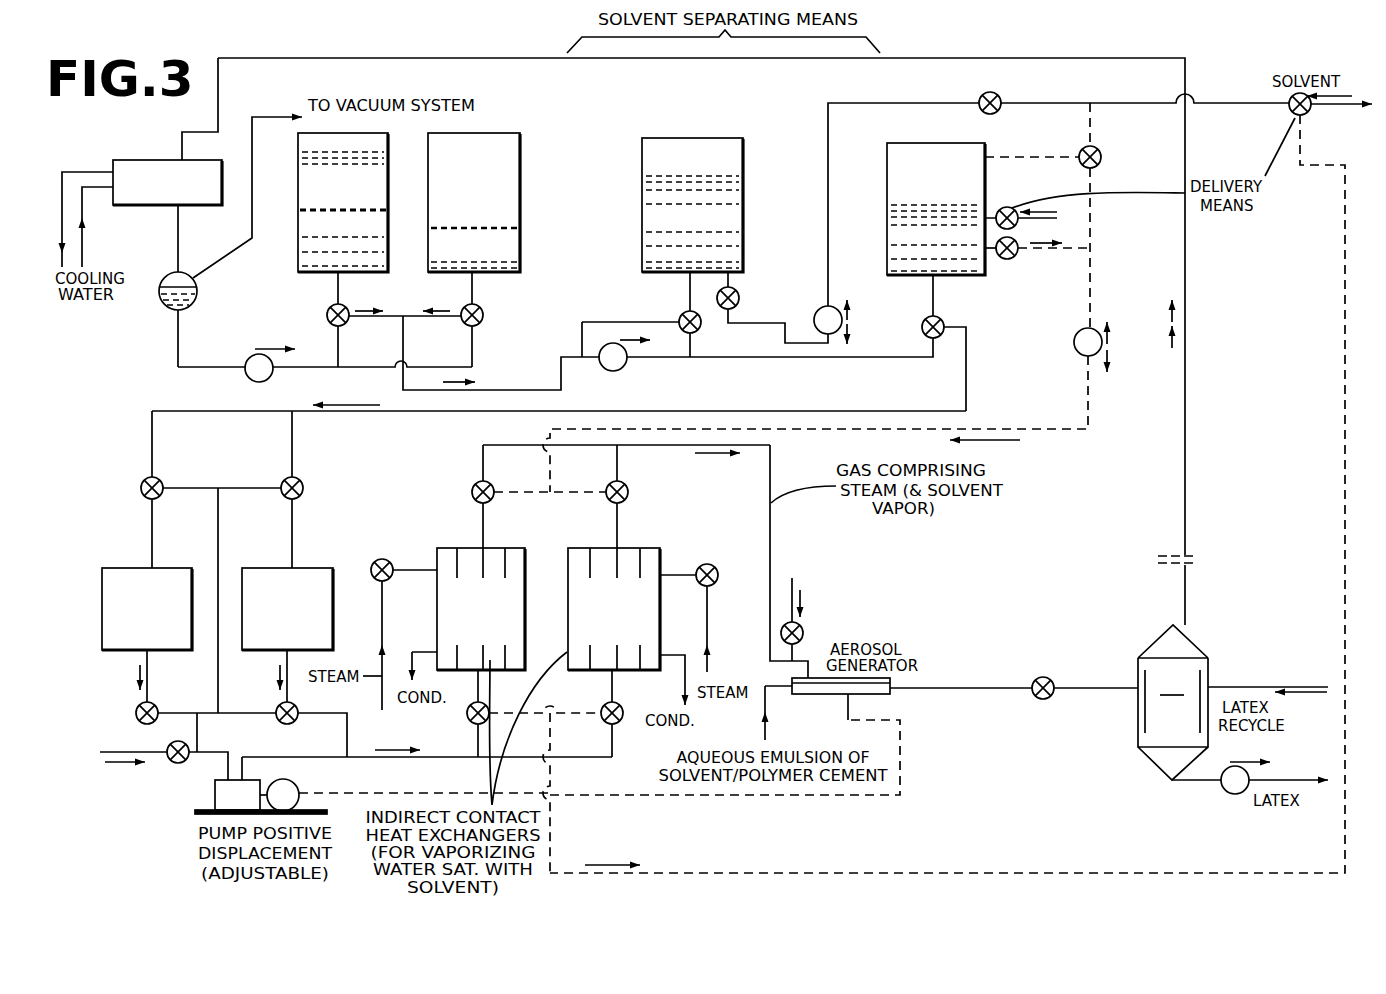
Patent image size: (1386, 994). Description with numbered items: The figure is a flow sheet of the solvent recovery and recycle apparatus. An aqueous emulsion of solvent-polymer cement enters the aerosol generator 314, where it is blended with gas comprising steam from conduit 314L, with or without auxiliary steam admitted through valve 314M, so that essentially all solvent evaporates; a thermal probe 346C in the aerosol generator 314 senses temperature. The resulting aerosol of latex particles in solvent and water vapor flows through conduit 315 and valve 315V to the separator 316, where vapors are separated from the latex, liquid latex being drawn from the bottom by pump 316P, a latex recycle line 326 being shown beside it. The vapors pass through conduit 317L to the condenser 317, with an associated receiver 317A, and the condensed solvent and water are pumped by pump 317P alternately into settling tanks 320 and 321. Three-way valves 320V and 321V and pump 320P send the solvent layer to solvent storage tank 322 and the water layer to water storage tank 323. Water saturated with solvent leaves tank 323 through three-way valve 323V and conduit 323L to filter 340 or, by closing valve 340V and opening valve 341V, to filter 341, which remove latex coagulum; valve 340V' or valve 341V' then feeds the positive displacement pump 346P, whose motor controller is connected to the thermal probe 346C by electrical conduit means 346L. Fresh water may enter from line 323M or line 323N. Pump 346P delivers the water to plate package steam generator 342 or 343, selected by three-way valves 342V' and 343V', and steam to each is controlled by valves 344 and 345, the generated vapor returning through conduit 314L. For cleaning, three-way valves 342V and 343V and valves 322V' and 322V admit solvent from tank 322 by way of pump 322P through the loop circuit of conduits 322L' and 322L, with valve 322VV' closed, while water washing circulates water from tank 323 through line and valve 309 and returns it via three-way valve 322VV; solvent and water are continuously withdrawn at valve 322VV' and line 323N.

The condenser 317 is at (150, 168).
The receiver 317A is at (197, 289).
The conduit 317L is at (558, 60).
The pump 317P is at (252, 360).
The settling tank 320 is at (318, 183).
The three-way valve 320V is at (328, 310).
The pump 320P is at (626, 367).
The settling tank 321 is at (503, 192).
The three-way valve 321V is at (461, 311).
The solvent storage tank 322 is at (665, 157).
The three-way valve 322V is at (814, 203).
The valve 322V' is at (772, 304).
The pump 322P is at (833, 307).
The conduit 322L is at (1186, 93).
The conduit 322L' is at (944, 494).
The three-way valve 322VV is at (1068, 215).
The valve 322VV' is at (1255, 119).
The water storage tank 323 is at (918, 150).
The line 323N is at (1003, 209).
The line and valve 309 is at (1005, 258).
The three-way valve 323V is at (940, 320).
The conduit 323L is at (190, 411).
The line 323M is at (141, 760).
The filter 340 is at (130, 575).
The three-way valve 340V is at (125, 477).
The valve 340V' is at (106, 712).
The filter 341 is at (270, 575).
The three-way valve 341V is at (266, 477).
The three-way valve 341V' is at (313, 709).
The plate package steam generator 342 is at (450, 556).
The three-way valve 342V is at (455, 511).
The three-way valve 342V' is at (447, 713).
The plate package steam generator 343 is at (585, 556).
The three-way valve 343V is at (642, 511).
The three-way valve 343V' is at (585, 713).
The valve 344 is at (375, 562).
The valve 345 is at (707, 564).
The positive displacement pump 346P is at (222, 795).
The electrical conduit means 346L is at (567, 795).
The thermal probe 346C is at (848, 692).
The aerosol generator 314 is at (880, 694).
The conduit 314L is at (771, 534).
The valve 314M is at (798, 641).
The conduit 315 is at (936, 688).
The valve 315V is at (1035, 682).
The separator 316 is at (1104, 668).
The pump 316P is at (1224, 790).
The latex recycle line 326 is at (1232, 687).